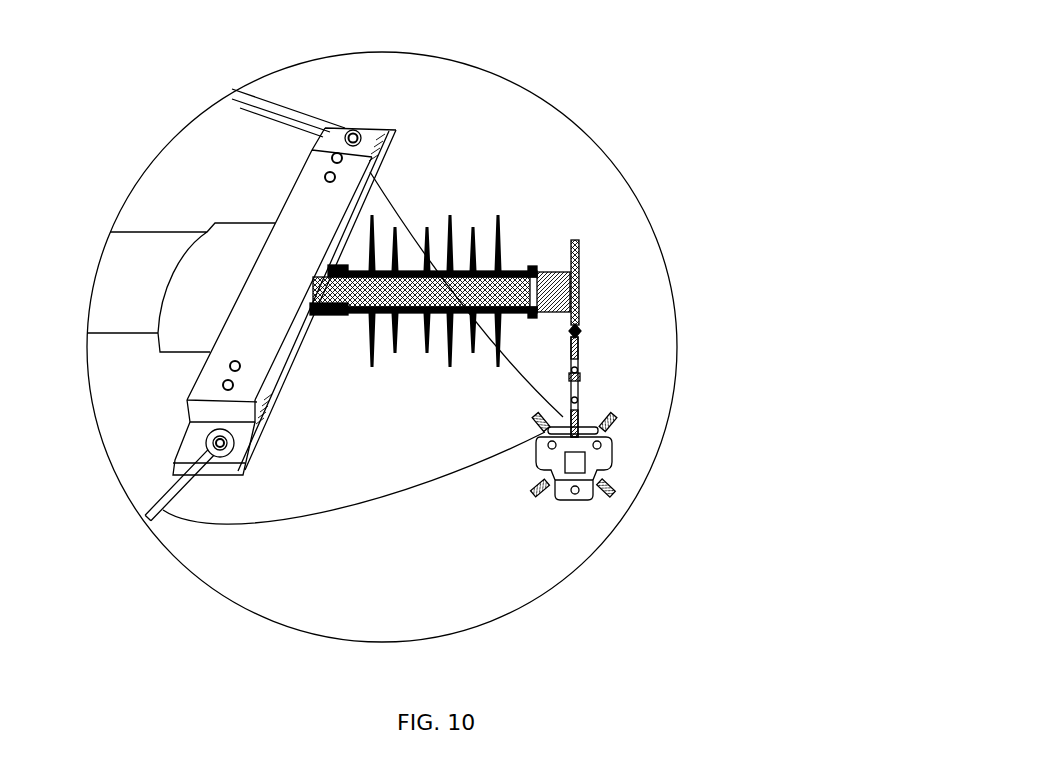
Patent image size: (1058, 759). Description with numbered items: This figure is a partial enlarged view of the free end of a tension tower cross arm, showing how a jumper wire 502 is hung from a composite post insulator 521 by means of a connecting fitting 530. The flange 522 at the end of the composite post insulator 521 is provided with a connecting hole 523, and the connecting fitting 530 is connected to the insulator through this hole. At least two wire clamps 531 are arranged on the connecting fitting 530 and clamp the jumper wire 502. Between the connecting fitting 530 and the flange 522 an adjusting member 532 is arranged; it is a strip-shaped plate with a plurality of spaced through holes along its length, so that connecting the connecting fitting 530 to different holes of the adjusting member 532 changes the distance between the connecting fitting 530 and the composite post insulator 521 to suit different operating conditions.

The composite post insulator 521 is at (450, 217).
The flange 522 is at (580, 287).
The connecting hole 523 is at (578, 247).
The connecting fitting 530 is at (610, 443).
The wire clamp 531 is at (617, 417).
The adjusting member 532 is at (580, 377).
The jumper wire 502 is at (450, 482).